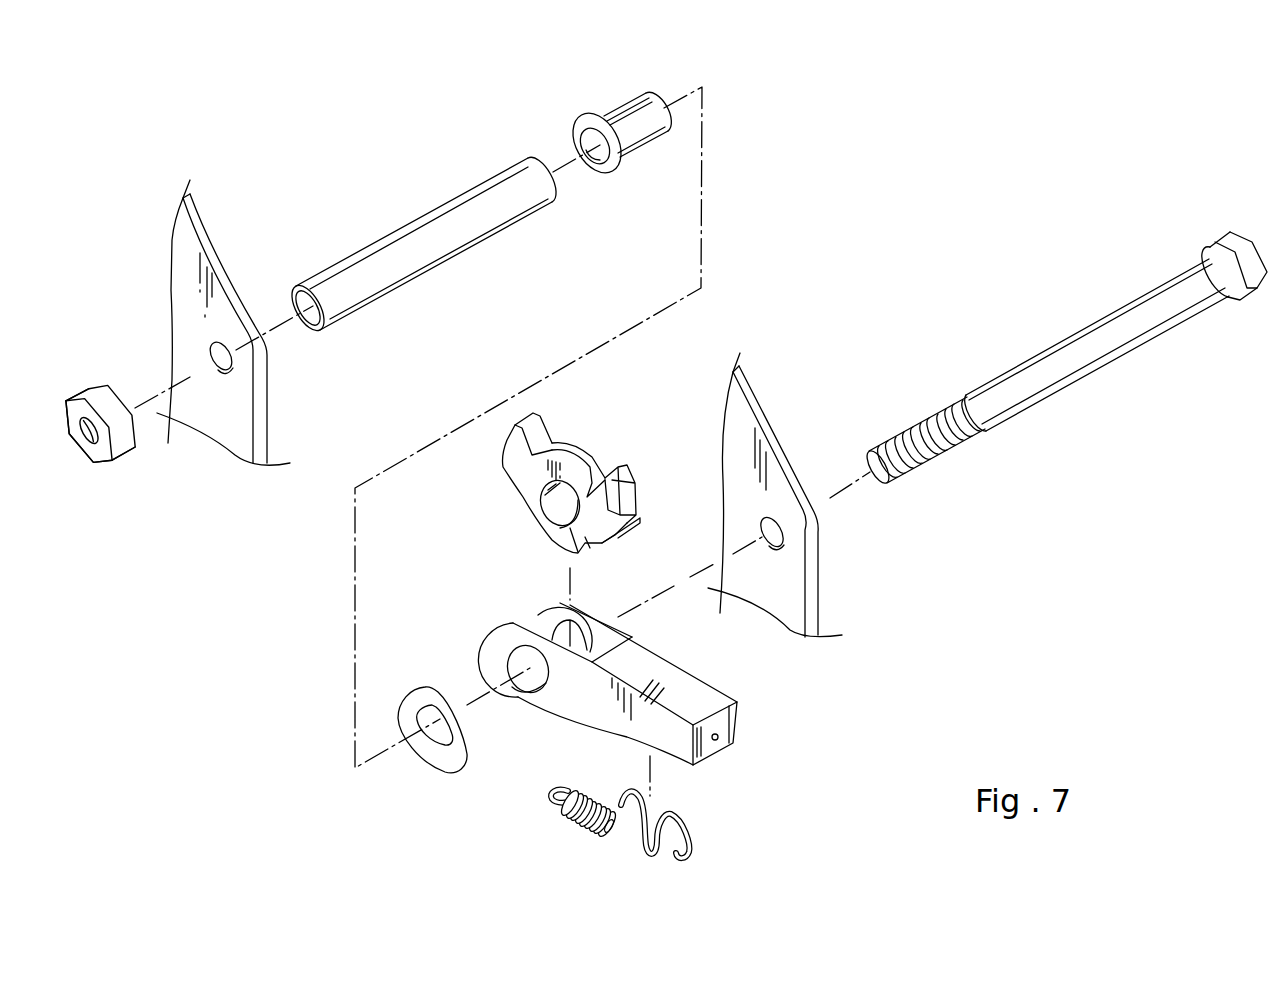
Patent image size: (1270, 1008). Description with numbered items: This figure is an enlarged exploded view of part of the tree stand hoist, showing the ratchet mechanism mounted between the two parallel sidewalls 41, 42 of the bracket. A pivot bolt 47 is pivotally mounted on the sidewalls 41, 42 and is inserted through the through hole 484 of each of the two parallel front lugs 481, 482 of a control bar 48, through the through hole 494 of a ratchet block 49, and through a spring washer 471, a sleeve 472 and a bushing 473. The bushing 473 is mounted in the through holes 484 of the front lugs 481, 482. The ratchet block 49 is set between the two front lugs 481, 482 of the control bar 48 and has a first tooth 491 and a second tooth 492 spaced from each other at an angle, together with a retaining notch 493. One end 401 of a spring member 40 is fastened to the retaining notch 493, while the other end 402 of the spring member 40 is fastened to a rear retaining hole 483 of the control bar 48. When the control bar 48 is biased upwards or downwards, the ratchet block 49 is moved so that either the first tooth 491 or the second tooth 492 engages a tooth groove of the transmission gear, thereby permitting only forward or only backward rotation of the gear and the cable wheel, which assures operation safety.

The spring member 40 is at (629, 827).
The one end of spring member 401 is at (560, 808).
The other end of spring member 402 is at (690, 838).
The sidewall 41 is at (818, 578).
The sidewall 42 is at (210, 242).
The pivot bolt 47 is at (1102, 367).
The spring washer 471 is at (418, 686).
The sleeve 472 is at (390, 233).
The bushing 473 is at (592, 112).
The control bar 48 is at (630, 645).
The front lug 481 is at (513, 623).
The front lug 482 is at (563, 610).
The rear retaining hole 483 is at (718, 737).
The through hole 484 is at (498, 632).
The ratchet block 49 is at (568, 449).
The first tooth 491 is at (625, 467).
The second tooth 492 is at (523, 420).
The retaining notch 493 is at (627, 522).
The through hole 494 is at (543, 495).